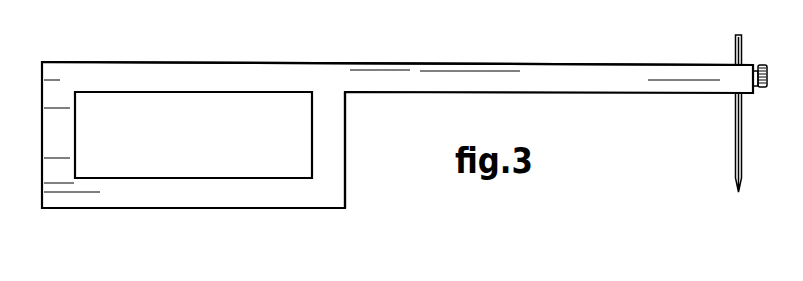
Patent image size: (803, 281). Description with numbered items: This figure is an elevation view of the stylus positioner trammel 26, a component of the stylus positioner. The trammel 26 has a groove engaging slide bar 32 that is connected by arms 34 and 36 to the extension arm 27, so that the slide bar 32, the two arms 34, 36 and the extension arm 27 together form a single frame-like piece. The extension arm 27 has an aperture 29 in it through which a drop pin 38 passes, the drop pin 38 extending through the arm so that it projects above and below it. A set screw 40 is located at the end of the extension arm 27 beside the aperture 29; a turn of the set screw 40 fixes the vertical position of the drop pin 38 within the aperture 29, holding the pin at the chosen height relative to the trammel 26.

The stylus positioner trammel 26 is at (452, 57).
The extension arm 27 is at (272, 62).
The aperture 29 is at (734, 47).
The groove engaging slide bar 32 is at (253, 208).
The arm 34 is at (70, 152).
The arm 36 is at (343, 158).
The drop pin 38 is at (735, 155).
The set screw 40 is at (763, 66).